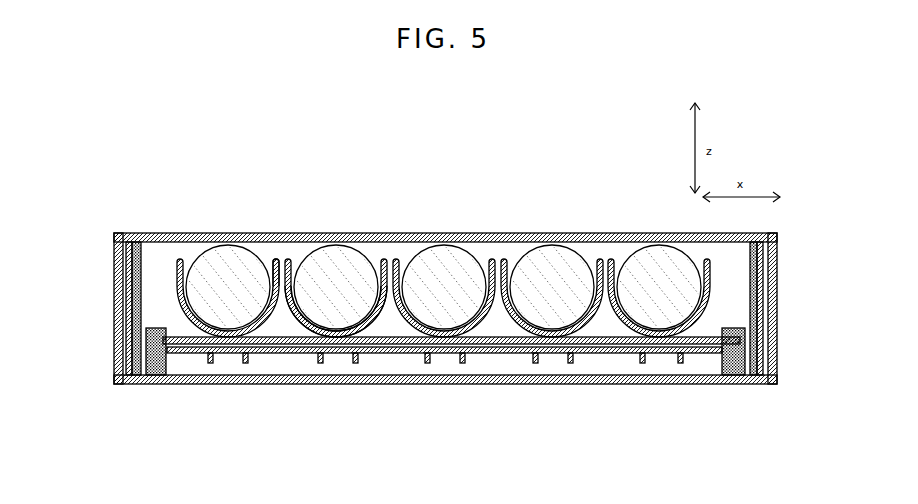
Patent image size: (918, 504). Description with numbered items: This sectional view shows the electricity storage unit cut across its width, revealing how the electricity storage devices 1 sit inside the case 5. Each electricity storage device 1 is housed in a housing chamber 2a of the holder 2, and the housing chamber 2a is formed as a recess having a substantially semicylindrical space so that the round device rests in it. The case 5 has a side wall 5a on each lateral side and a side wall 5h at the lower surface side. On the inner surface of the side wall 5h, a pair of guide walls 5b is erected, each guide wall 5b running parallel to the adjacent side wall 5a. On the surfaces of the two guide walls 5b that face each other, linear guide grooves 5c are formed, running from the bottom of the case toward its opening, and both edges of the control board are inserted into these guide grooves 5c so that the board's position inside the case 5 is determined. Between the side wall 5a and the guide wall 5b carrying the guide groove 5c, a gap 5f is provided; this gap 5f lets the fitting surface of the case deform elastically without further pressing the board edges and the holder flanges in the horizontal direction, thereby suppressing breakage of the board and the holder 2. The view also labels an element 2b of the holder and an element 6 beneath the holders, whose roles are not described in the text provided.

The electricity storage device 1 is at (446, 280).
The holder 2 is at (443, 306).
The housing chamber 2a is at (320, 330).
The partition wall of holder 2b is at (276, 262).
The case 5 is at (446, 312).
The side wall 5a is at (113, 312).
The guide wall 5b is at (152, 383).
The guide groove 5c is at (170, 383).
The gap 5f is at (138, 383).
The side wall 5h is at (572, 233).
The circuit board substrate 6 is at (410, 345).